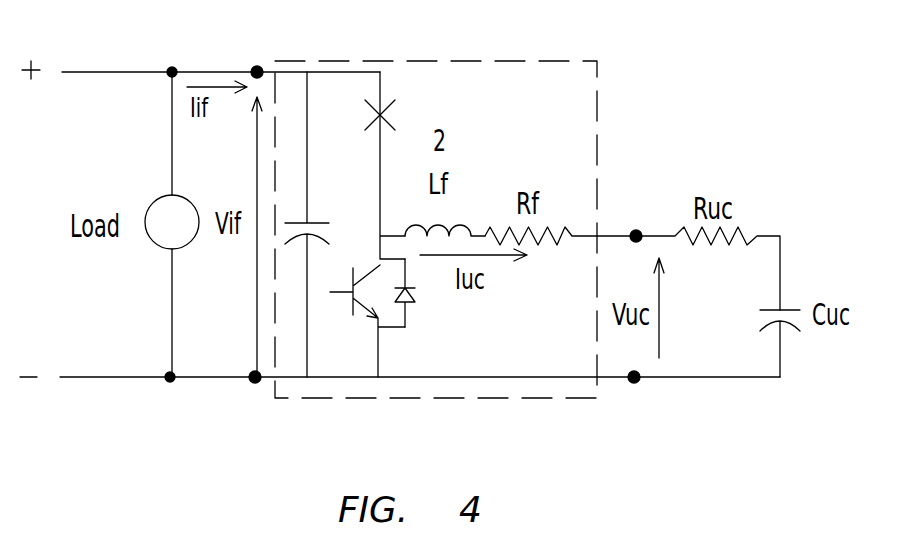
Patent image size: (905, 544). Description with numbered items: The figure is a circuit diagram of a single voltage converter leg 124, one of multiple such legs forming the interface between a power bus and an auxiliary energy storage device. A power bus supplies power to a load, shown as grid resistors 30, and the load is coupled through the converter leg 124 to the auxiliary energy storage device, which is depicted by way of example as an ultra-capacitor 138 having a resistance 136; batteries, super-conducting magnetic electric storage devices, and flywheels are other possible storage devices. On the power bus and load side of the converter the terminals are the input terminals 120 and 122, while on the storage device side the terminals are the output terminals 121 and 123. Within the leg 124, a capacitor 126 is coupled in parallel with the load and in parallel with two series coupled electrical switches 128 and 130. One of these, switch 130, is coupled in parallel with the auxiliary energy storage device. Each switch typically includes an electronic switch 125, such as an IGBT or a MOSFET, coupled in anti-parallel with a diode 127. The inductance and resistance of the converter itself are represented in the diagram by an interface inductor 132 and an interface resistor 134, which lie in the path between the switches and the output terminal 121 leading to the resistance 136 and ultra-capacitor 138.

The grid resistors 30 is at (158, 197).
The input terminal 120 is at (257, 66).
The output terminal 121 is at (634, 231).
The input terminal 122 is at (255, 382).
The output terminal 123 is at (634, 383).
The voltage converter leg 124 is at (470, 60).
The electronic switch 125 is at (373, 273).
The capacitor 126 is at (293, 205).
The diode 127 is at (414, 301).
The electrical switch 128 is at (385, 118).
The electrical switch 130 is at (442, 314).
The interface inductor 132 is at (460, 216).
The interface resistor 134 is at (556, 231).
The resistance 136 is at (745, 233).
The ultra-capacitor 138 is at (775, 310).